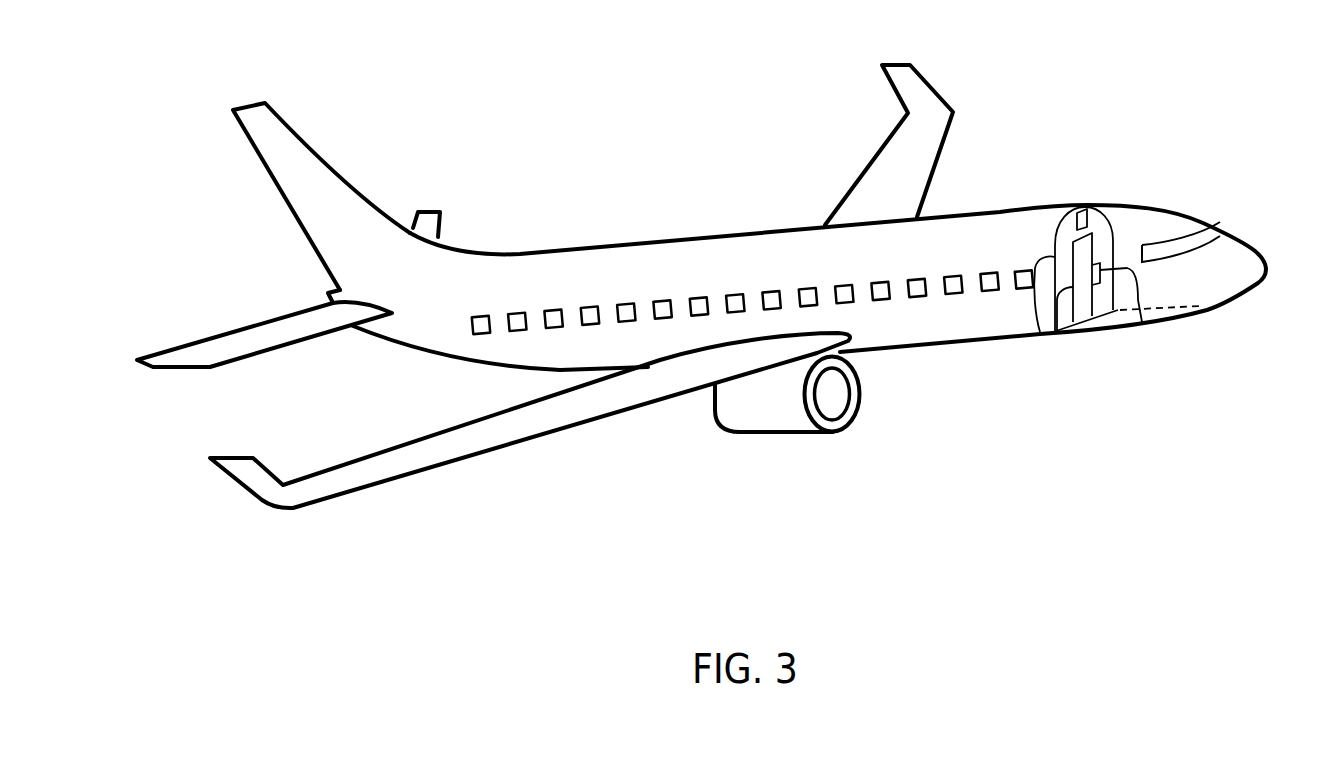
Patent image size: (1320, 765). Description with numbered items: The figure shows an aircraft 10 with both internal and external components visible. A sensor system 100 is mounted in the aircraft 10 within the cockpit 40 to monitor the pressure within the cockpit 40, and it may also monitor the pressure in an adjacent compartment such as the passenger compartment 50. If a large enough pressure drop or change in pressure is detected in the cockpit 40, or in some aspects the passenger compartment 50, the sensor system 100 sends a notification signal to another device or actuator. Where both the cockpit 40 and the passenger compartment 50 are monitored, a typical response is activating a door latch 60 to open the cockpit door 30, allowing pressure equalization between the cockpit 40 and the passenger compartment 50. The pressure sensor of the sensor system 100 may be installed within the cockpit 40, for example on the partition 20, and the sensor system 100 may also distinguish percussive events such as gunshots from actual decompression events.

The aircraft 10 is at (598, 136).
The partition 20 is at (1038, 330).
The cockpit door 30 is at (1063, 330).
The cockpit 40 is at (1152, 222).
The passenger compartment 50 is at (617, 263).
The door latch 60 is at (1145, 327).
The sensor system 100 is at (1087, 208).